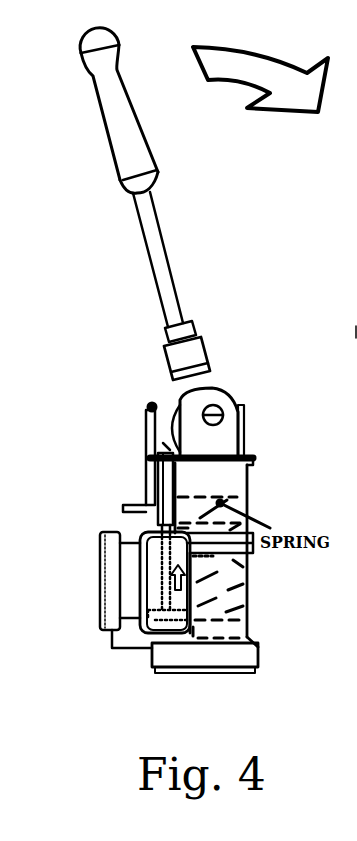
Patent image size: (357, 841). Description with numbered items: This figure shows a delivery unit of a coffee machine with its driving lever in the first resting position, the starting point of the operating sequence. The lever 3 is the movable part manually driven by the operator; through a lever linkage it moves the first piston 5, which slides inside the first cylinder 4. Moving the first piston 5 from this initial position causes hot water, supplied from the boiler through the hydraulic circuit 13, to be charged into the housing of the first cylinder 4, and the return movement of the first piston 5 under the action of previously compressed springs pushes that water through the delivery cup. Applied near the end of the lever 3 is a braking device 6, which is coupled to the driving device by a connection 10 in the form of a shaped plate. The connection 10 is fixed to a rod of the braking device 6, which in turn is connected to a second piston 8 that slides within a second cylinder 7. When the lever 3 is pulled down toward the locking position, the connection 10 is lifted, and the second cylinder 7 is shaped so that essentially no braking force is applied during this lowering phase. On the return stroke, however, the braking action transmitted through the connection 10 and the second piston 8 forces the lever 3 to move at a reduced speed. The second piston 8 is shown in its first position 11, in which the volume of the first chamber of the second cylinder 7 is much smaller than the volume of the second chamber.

The lever 3 is at (148, 238).
The hydraulic circuit 13 is at (148, 405).
The connection 10 is at (166, 480).
The first cylinder 4 is at (243, 600).
The first piston 5 is at (233, 638).
The braking device 6 is at (102, 590).
The second cylinder 7 is at (145, 562).
The second piston 8 is at (127, 617).
The first position 11 is at (142, 633).